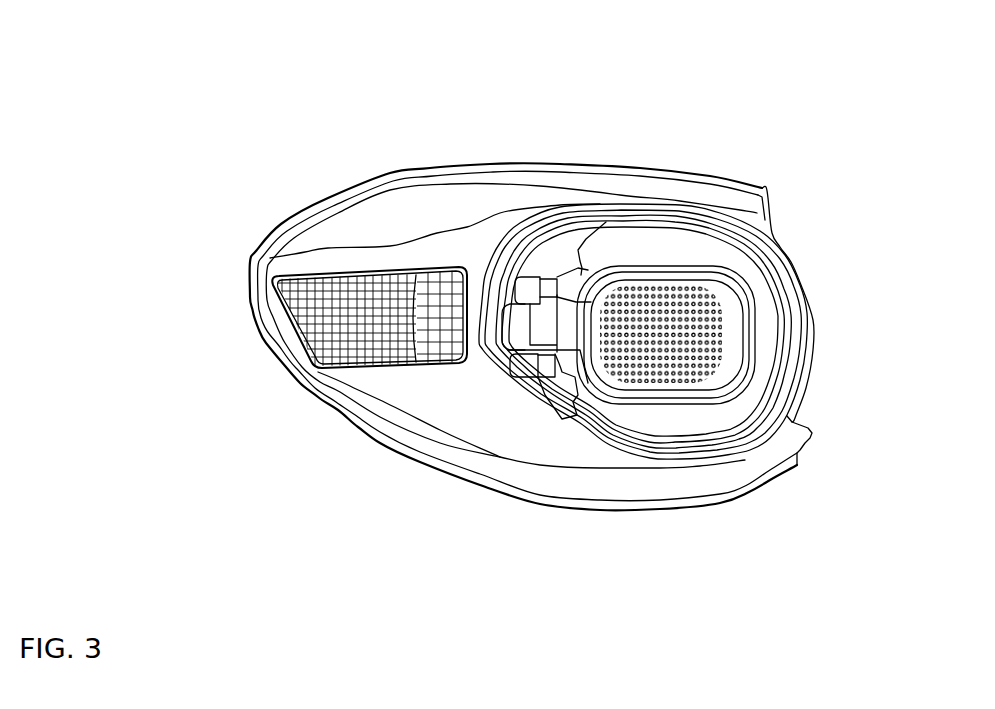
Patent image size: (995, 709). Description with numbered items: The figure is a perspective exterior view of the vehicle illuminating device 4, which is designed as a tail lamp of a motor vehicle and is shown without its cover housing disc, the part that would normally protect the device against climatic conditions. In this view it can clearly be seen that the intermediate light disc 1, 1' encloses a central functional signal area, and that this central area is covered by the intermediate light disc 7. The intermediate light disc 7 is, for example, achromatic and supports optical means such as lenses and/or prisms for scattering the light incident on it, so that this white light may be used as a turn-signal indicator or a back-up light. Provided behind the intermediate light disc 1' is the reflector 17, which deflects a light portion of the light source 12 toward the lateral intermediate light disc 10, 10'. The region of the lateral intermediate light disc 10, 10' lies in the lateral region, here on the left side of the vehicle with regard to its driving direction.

The vehicle illuminating device 4 is at (832, 168).
The lateral intermediate light disc 10 is at (368, 240).
The lateral intermediate light disc 10' is at (410, 240).
The light source 12 is at (519, 317).
The reflector 17 is at (564, 322).
The intermediate light disc 1' is at (619, 193).
The intermediate light disc 7 is at (688, 315).
The intermediate light disc 1 is at (643, 285).